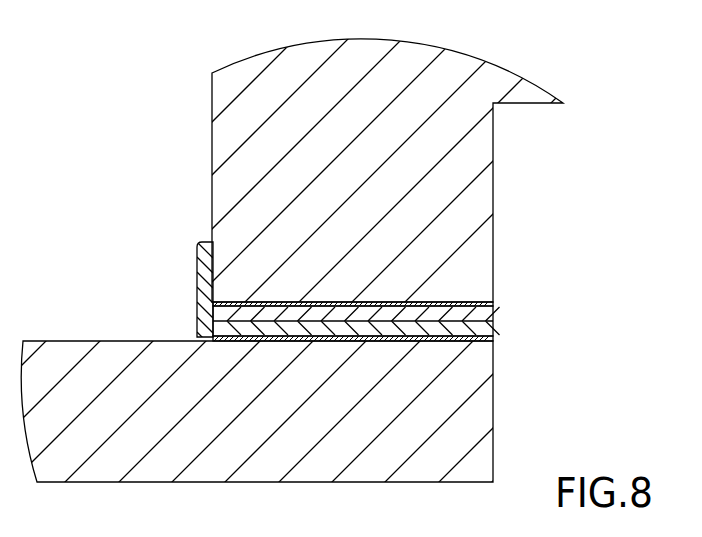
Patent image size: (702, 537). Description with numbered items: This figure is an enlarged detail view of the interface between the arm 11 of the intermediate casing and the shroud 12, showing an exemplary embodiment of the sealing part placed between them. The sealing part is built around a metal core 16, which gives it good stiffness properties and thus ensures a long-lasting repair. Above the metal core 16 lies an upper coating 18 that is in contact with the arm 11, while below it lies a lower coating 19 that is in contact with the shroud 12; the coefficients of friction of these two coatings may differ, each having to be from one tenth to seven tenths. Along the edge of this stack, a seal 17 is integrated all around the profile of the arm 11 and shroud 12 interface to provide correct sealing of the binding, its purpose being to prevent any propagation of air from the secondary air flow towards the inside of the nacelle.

The arm 11 is at (475, 192).
The shroud 12 is at (468, 438).
The metal core 16 is at (483, 315).
The seal 17 is at (208, 320).
The upper coating 18 is at (493, 303).
The lower coating 19 is at (493, 338).